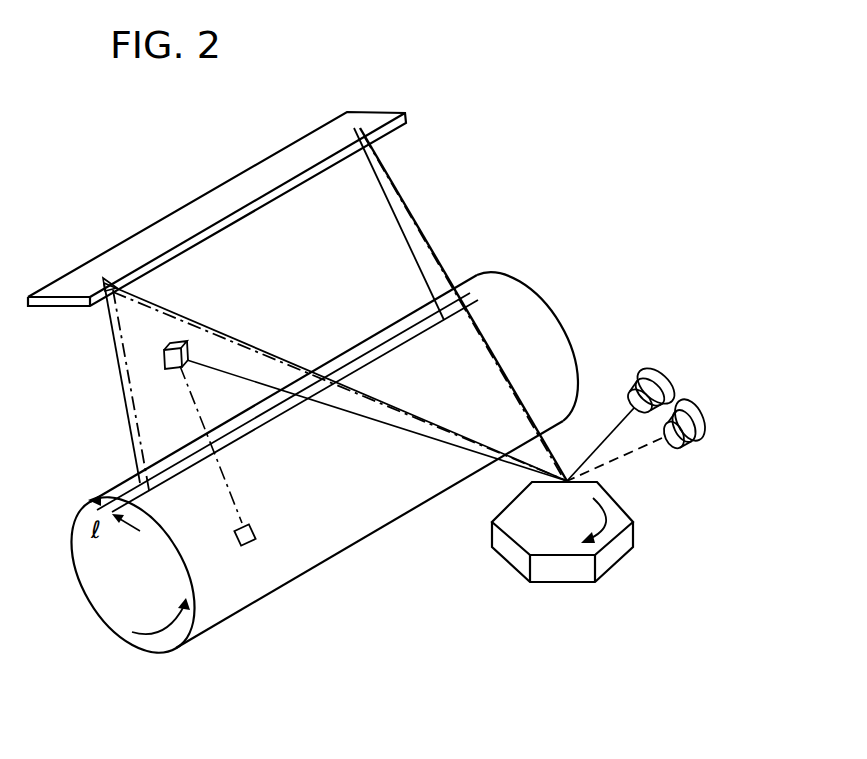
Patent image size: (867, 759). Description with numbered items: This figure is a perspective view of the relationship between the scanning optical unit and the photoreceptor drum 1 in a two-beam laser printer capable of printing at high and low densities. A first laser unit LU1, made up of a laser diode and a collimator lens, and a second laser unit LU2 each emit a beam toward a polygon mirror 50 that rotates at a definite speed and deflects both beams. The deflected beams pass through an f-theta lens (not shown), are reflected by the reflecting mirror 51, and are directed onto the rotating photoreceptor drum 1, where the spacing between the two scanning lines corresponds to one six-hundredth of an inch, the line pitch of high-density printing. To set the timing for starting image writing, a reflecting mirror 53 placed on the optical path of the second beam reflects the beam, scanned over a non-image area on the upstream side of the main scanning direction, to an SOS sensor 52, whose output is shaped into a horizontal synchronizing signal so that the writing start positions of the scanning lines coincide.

The photoreceptor drum 1 is at (100, 592).
The polygon mirror 50 is at (567, 573).
The reflecting mirror 51 is at (370, 123).
The SOS sensor 52 is at (245, 550).
The reflecting mirror 53 is at (166, 369).
The first laser unit LU1 is at (647, 370).
The second laser unit LU2 is at (697, 416).